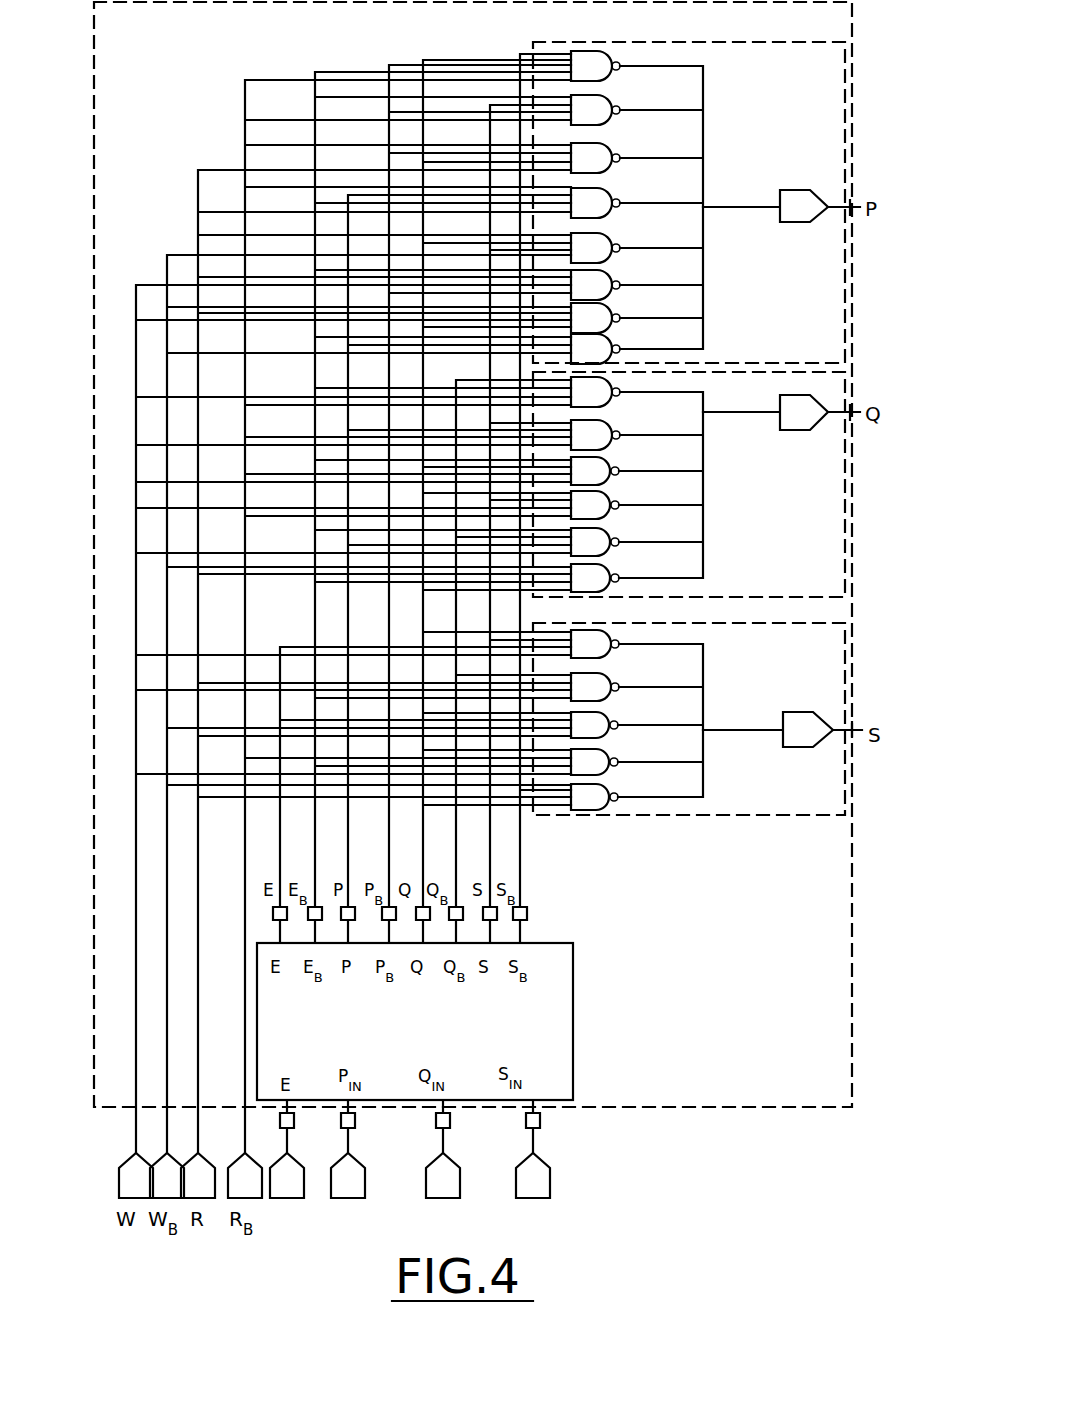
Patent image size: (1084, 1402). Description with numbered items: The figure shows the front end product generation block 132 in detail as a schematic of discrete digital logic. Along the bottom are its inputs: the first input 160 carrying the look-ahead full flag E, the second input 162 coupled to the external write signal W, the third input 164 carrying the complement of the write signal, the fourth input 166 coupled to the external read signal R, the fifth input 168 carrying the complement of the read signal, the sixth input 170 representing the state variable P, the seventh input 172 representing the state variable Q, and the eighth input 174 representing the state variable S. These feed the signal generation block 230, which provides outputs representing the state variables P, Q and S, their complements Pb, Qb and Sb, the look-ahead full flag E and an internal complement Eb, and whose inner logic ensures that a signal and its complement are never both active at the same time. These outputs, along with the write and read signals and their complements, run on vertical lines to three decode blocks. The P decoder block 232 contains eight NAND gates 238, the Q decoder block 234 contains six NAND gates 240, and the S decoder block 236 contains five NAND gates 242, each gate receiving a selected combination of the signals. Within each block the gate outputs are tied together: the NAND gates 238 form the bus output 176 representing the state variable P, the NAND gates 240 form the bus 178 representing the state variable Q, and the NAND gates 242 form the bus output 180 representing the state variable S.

The front end product generation block 132 is at (852, 166).
The first input 160 is at (290, 1150).
The second input 162 is at (122, 1170).
The third input 164 is at (186, 1162).
The fourth input 166 is at (218, 1162).
The fifth input 168 is at (263, 1162).
The sixth input 170 is at (352, 1150).
The seventh input 172 is at (445, 1142).
The eighth input 174 is at (537, 1144).
The bus output 176 is at (855, 206).
The bus 178 is at (851, 411).
The bus output 180 is at (852, 729).
The signal generation block 230 is at (578, 972).
The P decoder block 232 is at (826, 42).
The Q decoder block 234 is at (852, 513).
The S decoder block 236 is at (852, 666).
The NAND gates 238 is at (603, 50).
The NAND gates 240 is at (612, 400).
The NAND gates 242 is at (610, 655).